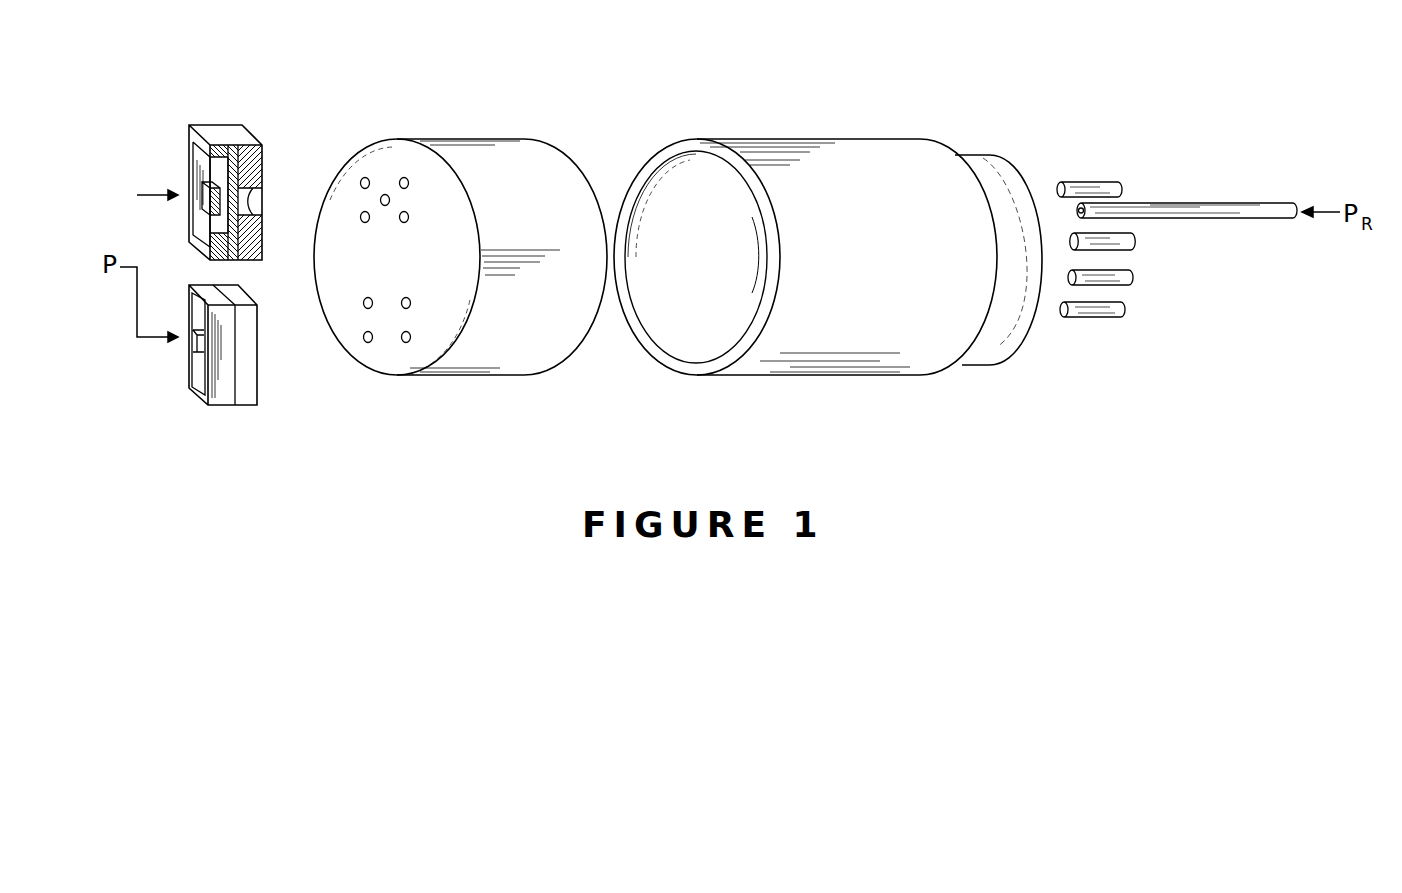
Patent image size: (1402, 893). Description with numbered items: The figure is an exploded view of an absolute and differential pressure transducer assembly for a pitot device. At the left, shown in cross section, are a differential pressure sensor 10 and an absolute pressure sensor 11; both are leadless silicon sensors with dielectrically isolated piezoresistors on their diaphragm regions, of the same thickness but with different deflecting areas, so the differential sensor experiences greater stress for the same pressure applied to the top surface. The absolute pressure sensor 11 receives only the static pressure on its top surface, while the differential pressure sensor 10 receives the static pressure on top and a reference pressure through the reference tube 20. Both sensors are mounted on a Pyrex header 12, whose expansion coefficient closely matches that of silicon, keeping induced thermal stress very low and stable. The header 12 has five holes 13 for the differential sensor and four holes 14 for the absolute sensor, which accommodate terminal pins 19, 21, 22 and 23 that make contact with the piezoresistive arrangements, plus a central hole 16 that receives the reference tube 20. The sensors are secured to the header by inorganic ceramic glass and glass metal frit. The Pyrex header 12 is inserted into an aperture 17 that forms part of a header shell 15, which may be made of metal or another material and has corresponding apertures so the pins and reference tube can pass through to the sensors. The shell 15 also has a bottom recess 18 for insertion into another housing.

The differential pressure sensor 10 is at (223, 132).
The absolute pressure sensor 11 is at (220, 407).
The Pyrex header 12 is at (460, 229).
The holes associated with the differential sensor 13 is at (361, 154).
The holes associated with the absolute sensor 14 is at (378, 367).
The header shell 15 is at (828, 206).
The central hole 16 is at (386, 194).
The aperture 17 is at (680, 212).
The bottom recess 18 is at (978, 168).
The terminal pin 19 is at (1093, 187).
The reference tube 20 is at (1157, 210).
The terminal pin 21 is at (1125, 242).
The terminal pin 22 is at (1128, 280).
The terminal pin 23 is at (1090, 317).